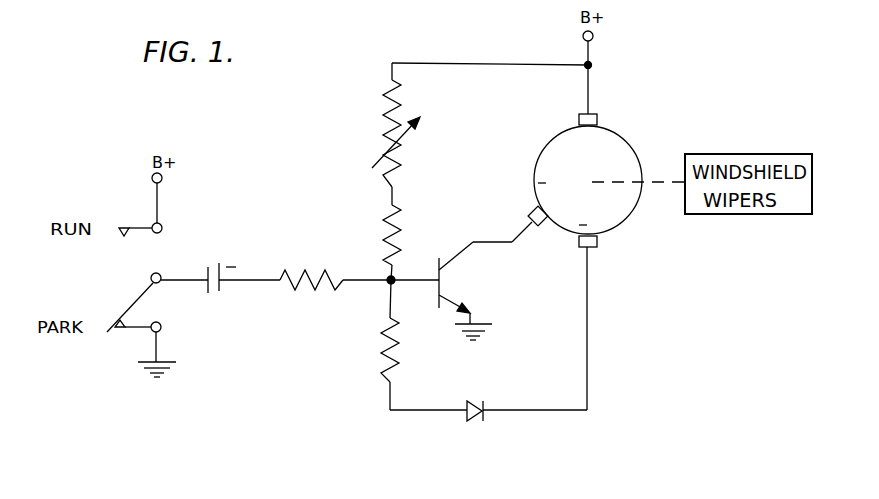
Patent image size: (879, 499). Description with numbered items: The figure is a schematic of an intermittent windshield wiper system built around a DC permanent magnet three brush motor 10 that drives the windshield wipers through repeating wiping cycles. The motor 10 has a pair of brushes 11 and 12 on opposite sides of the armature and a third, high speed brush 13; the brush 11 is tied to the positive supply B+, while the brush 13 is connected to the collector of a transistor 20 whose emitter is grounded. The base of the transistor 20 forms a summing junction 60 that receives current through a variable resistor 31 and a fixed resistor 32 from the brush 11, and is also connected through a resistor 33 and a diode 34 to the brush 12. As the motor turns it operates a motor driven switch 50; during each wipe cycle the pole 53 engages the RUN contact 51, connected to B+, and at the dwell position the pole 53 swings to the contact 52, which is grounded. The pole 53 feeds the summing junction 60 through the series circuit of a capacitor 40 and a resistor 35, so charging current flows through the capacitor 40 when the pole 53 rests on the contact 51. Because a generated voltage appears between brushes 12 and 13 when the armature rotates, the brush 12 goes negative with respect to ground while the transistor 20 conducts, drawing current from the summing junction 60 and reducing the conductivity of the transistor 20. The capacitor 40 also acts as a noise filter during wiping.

The DC permanent magnet three brush motor 10 is at (637, 153).
The brush 11 is at (597, 120).
The brush 12 is at (597, 239).
The third brush 13 is at (530, 208).
The transistor 20 is at (455, 287).
The variable resistor 31 is at (385, 122).
The fixed resistor 32 is at (383, 243).
The resistor 33 is at (385, 358).
The diode 34 is at (473, 400).
The resistor 35 is at (313, 270).
The capacitor 40 is at (215, 260).
The motor driven switch 50 is at (130, 284).
The contact 51 is at (134, 228).
The contact 52 is at (137, 330).
The pole 53 is at (135, 300).
The summing junction 60 is at (388, 288).